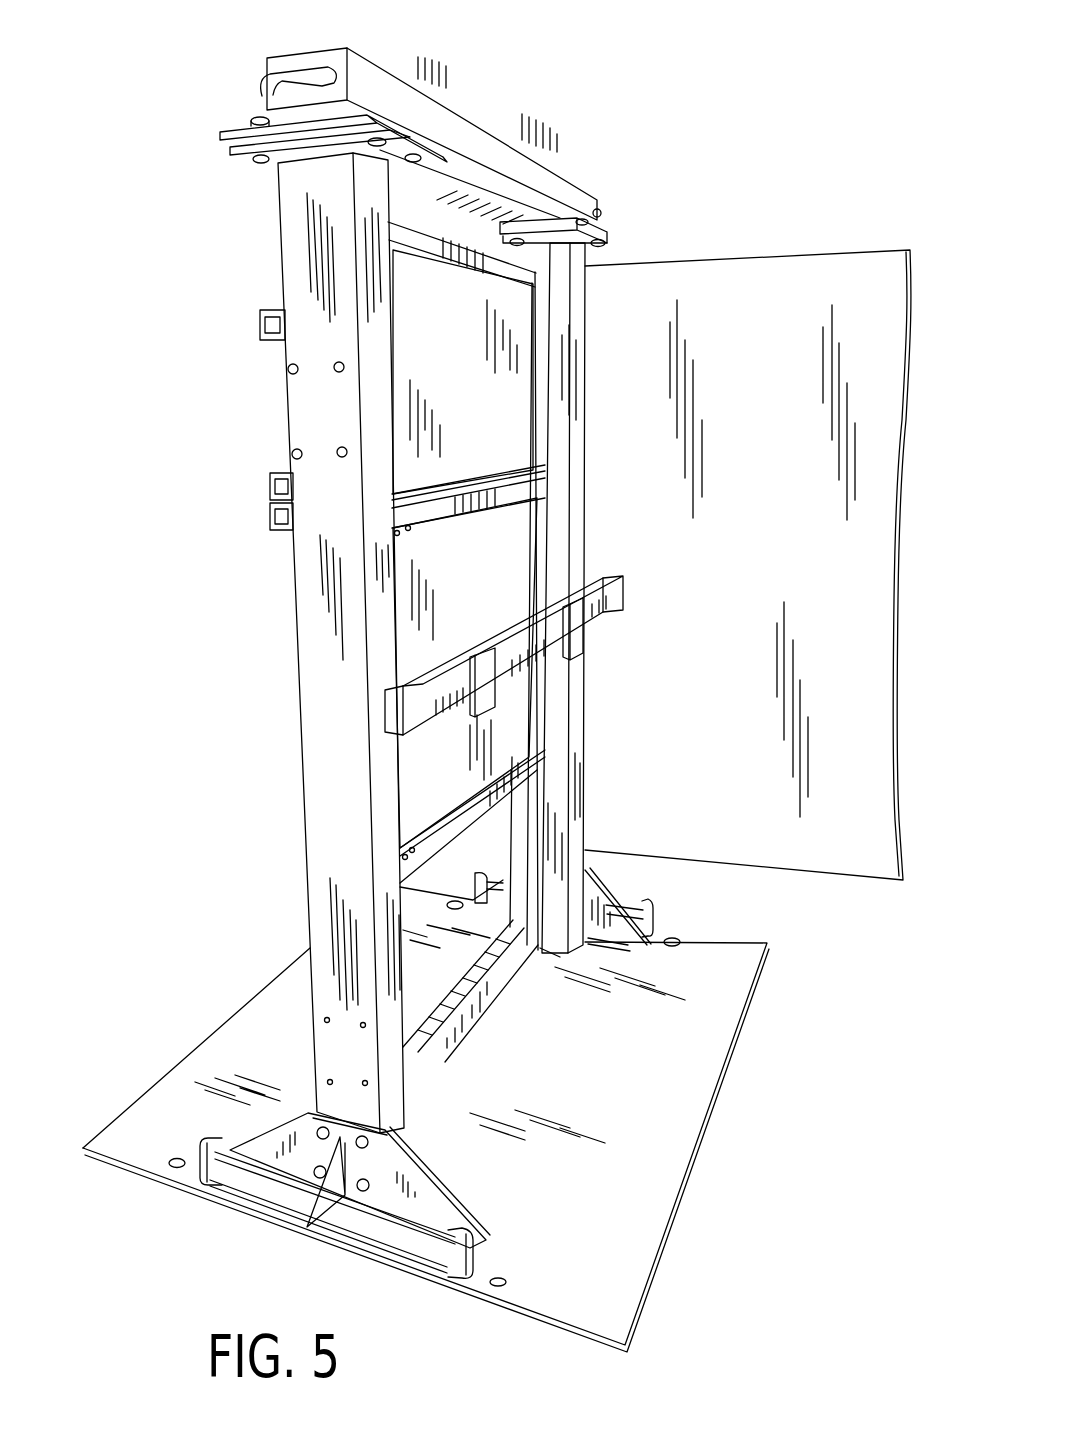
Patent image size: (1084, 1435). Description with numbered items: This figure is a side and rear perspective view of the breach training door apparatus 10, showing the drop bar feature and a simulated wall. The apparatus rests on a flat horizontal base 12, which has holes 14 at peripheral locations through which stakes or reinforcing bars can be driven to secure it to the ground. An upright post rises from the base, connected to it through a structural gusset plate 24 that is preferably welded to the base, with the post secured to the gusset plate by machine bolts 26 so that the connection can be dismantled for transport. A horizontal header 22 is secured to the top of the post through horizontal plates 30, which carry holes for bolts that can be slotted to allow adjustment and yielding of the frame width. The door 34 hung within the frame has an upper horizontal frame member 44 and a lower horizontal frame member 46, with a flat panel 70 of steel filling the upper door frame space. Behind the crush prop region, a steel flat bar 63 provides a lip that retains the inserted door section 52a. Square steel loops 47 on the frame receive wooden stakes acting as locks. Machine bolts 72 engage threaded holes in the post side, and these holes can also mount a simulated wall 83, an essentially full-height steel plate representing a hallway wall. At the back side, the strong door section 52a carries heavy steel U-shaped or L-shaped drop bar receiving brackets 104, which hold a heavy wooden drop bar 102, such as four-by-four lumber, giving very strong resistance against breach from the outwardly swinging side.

The breach training door apparatus 10 is at (580, 146).
The base 12 is at (712, 936).
The holes 14 is at (455, 901).
The header 22 is at (409, 95).
The gusset plate 24 is at (593, 880).
The machine bolts 26 is at (318, 1177).
The horizontal plates 30 is at (247, 126).
The door 34 is at (552, 302).
The upper horizontal frame member 44 is at (433, 237).
The lower horizontal frame member 46 is at (503, 978).
The steel loops 47 is at (263, 323).
The door section 52a is at (497, 596).
The flat bar 63 is at (500, 493).
The flat panel 70 is at (470, 373).
The machine bolts 72 is at (335, 369).
The simulated wall 83 is at (785, 519).
The drop bar 102 is at (617, 597).
The drop bar receiving brackets 104 is at (483, 673).